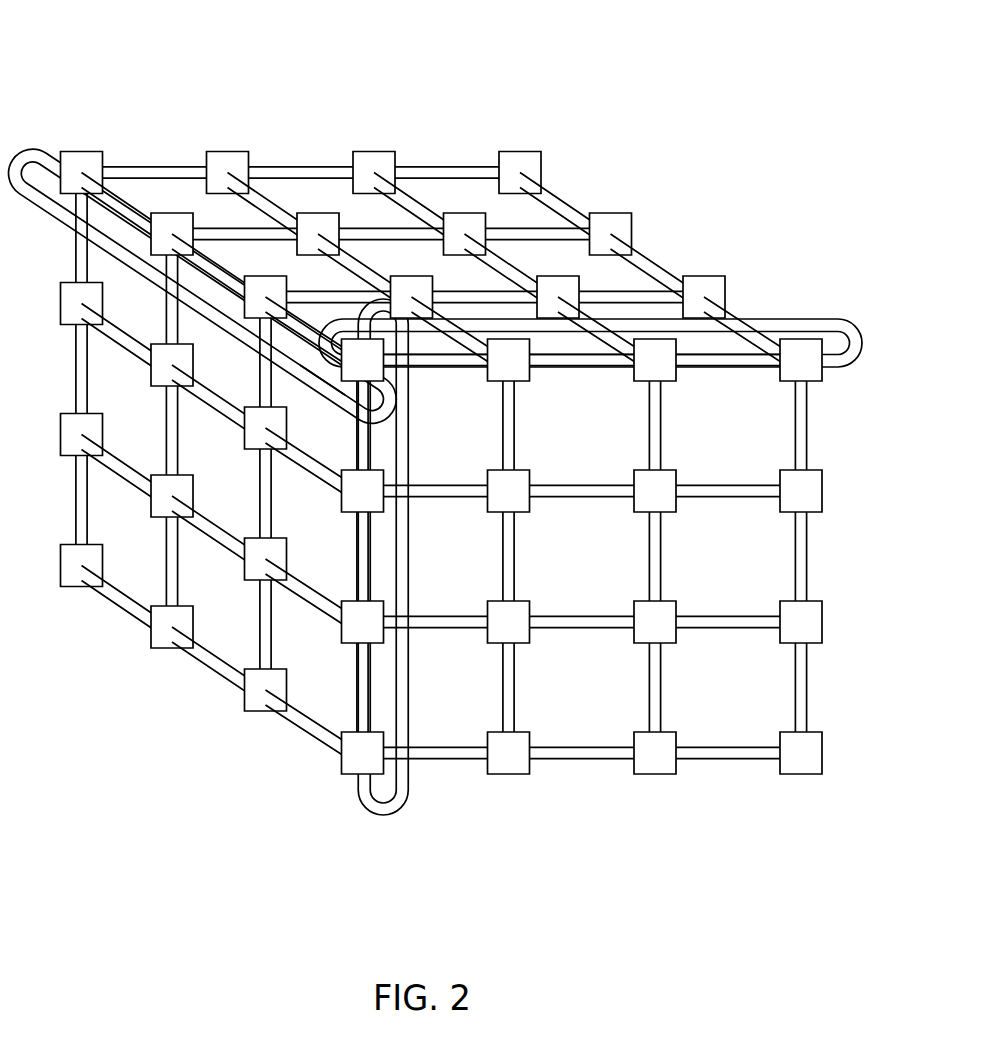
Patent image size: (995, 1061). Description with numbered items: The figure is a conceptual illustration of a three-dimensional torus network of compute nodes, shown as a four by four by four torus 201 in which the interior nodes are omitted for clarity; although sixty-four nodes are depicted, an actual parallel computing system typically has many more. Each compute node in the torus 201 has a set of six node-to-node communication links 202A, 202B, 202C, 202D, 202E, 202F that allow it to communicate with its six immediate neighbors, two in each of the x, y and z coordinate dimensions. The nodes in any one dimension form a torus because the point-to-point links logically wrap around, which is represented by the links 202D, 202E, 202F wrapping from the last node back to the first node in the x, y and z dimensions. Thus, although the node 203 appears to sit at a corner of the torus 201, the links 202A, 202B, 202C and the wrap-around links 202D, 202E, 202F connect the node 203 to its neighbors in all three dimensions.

The torus 201 is at (585, 79).
The node-to-node communication link 202A is at (429, 368).
The node-to-node communication link 202B is at (370, 447).
The node-to-node communication link 202C is at (308, 322).
The wrap-around link 202D is at (820, 318).
The wrap-around link 202E is at (382, 815).
The wrap-around link 202F is at (27, 148).
The node 203 is at (327, 383).